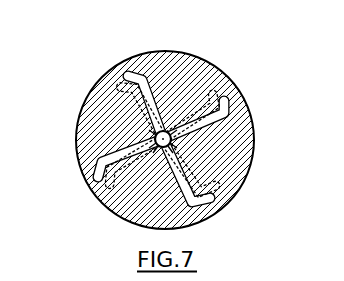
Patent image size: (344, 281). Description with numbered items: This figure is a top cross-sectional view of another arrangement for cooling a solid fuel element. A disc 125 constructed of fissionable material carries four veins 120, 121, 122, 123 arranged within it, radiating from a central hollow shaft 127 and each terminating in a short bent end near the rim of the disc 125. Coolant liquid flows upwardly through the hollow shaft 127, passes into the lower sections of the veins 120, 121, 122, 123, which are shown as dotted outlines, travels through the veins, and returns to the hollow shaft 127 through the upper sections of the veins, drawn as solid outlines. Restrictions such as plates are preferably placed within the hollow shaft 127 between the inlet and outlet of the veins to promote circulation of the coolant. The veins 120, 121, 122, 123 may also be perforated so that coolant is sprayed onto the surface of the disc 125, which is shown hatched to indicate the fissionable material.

The vein 120 is at (137, 80).
The vein 121 is at (232, 105).
The vein 122 is at (196, 204).
The vein 123 is at (93, 175).
The disc 125 is at (203, 60).
The hollow shaft 127 is at (172, 138).